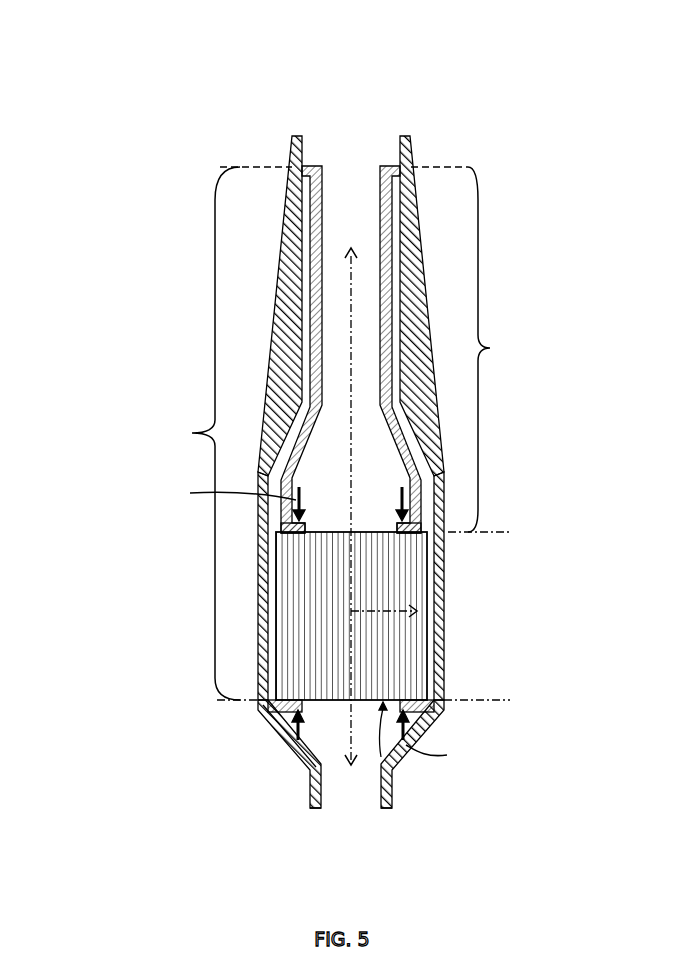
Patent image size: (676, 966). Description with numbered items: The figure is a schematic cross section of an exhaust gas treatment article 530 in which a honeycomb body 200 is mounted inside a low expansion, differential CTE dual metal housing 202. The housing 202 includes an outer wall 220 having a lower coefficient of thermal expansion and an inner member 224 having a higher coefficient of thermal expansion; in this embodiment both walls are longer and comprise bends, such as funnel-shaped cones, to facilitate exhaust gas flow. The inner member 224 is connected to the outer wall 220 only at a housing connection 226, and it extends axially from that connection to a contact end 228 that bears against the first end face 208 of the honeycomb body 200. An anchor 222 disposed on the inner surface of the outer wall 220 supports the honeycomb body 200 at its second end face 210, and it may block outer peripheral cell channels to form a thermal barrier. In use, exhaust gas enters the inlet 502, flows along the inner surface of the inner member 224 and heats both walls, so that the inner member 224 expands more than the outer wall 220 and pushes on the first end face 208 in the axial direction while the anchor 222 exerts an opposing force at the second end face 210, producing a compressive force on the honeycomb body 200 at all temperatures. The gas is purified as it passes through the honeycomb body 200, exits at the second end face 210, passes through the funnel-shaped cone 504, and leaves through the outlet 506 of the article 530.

The exhaust gas treatment article 530 is at (158, 81).
The inlet 502 is at (341, 136).
The housing connection 226 is at (393, 165).
The housing 202 is at (133, 221).
The inner member 224 is at (320, 326).
The first end face 208 is at (331, 522).
The contact end 228 is at (303, 525).
The outer wall 220 is at (443, 577).
The honeycomb body 200 is at (403, 673).
The anchor 222 is at (258, 711).
The funnel-shaped cone 504 is at (282, 738).
The second end face 210 is at (392, 768).
The outlet 506 is at (354, 818).